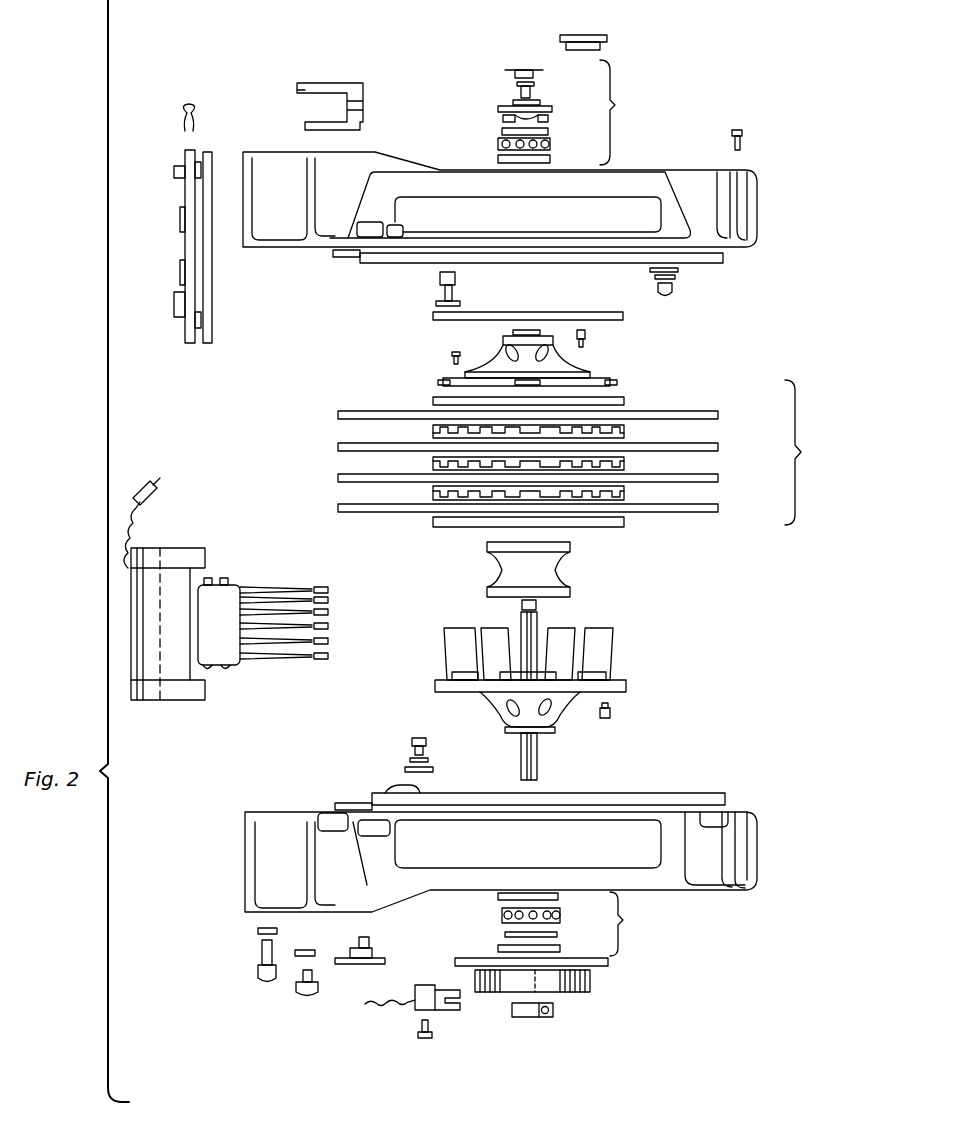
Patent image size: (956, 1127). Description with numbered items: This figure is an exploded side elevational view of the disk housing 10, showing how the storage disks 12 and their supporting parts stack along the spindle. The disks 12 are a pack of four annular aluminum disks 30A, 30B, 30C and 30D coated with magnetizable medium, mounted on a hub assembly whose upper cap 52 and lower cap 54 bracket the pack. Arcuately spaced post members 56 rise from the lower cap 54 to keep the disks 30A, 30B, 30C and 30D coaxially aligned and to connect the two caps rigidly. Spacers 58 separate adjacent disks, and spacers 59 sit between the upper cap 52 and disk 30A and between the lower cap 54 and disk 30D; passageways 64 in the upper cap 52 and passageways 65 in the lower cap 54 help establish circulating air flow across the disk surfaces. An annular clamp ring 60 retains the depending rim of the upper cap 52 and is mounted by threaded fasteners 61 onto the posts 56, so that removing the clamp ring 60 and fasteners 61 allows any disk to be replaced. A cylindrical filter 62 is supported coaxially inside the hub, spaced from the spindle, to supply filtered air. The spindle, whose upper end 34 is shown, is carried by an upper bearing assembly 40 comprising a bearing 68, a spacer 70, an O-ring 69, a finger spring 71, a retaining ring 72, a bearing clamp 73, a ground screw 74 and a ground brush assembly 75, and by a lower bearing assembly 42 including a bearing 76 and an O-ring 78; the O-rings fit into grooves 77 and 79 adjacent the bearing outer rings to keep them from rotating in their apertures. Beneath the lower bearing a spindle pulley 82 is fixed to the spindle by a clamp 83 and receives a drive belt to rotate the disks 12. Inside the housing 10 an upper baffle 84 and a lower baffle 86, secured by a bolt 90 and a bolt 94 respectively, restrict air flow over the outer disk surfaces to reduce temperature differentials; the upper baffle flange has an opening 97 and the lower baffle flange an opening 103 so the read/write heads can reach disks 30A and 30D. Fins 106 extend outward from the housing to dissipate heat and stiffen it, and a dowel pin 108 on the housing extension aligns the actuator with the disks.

The housing 10 is at (785, 196).
The disks 12 is at (585, 464).
The disk 30A is at (718, 414).
The disk 30B is at (718, 446).
The disk 30C is at (718, 477).
The disk 30D is at (718, 507).
The upper end of spindle 34 is at (521, 757).
The upper bearing assembly 40 is at (544, 101).
The lower bearing assembly 42 is at (553, 924).
The upper cap 52 is at (529, 356).
The lower cap 54 is at (488, 692).
The post members 56 is at (494, 628).
The spacers 58 is at (433, 431).
The spacers 59 is at (433, 400).
The clamp ring 60 is at (433, 316).
The threaded fasteners 61 is at (458, 282).
The cylindrical filter 62 is at (571, 572).
The passageways 64 is at (511, 349).
The passageways 65 is at (553, 716).
The bearing 68 is at (498, 144).
The O-ring 69 is at (550, 159).
The spacer 70 is at (548, 131).
The finger spring 71 is at (503, 120).
The retaining ring 72 is at (552, 109).
The bearing clamp 73 is at (513, 102).
The ground screw 74 is at (517, 84).
The ground brush assembly 75 is at (513, 68).
The bearing 76 is at (560, 912).
The groove 77 is at (498, 897).
The O-ring 78 is at (505, 934).
The groove 79 is at (560, 948).
The spindle pulley 82 is at (590, 982).
The clamp 83 is at (545, 1017).
The upper baffle 84 is at (326, 255).
The lower baffle 86 is at (725, 796).
The bolt 90 is at (672, 290).
The bolt 94 is at (412, 742).
The opening 97 is at (363, 264).
The opening 103 is at (352, 800).
The fins 106 is at (717, 170).
The dowel pin 108 is at (600, 35).